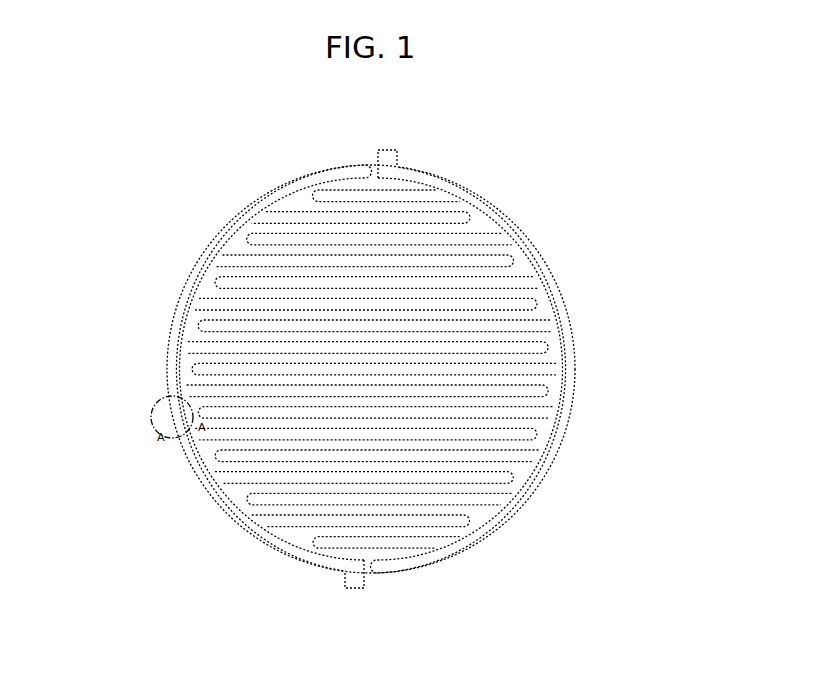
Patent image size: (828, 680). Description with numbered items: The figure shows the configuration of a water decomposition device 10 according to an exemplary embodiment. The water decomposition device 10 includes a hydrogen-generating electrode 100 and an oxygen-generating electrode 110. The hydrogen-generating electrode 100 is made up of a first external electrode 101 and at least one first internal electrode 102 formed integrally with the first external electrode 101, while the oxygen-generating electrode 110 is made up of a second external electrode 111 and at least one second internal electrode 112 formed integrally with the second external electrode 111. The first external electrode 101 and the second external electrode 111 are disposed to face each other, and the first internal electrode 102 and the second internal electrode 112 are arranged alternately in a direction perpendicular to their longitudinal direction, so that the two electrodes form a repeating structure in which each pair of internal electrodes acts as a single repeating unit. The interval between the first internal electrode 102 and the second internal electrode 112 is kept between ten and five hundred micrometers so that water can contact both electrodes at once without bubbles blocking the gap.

The water decomposition device 10 is at (497, 153).
The hydrogen-generating electrode 100 is at (301, 376).
The first external electrode 101 is at (198, 500).
The first internal electrode 102 is at (197, 464).
The oxygen-generating electrode 110 is at (444, 361).
The second external electrode 111 is at (548, 483).
The second internal electrode 112 is at (548, 438).